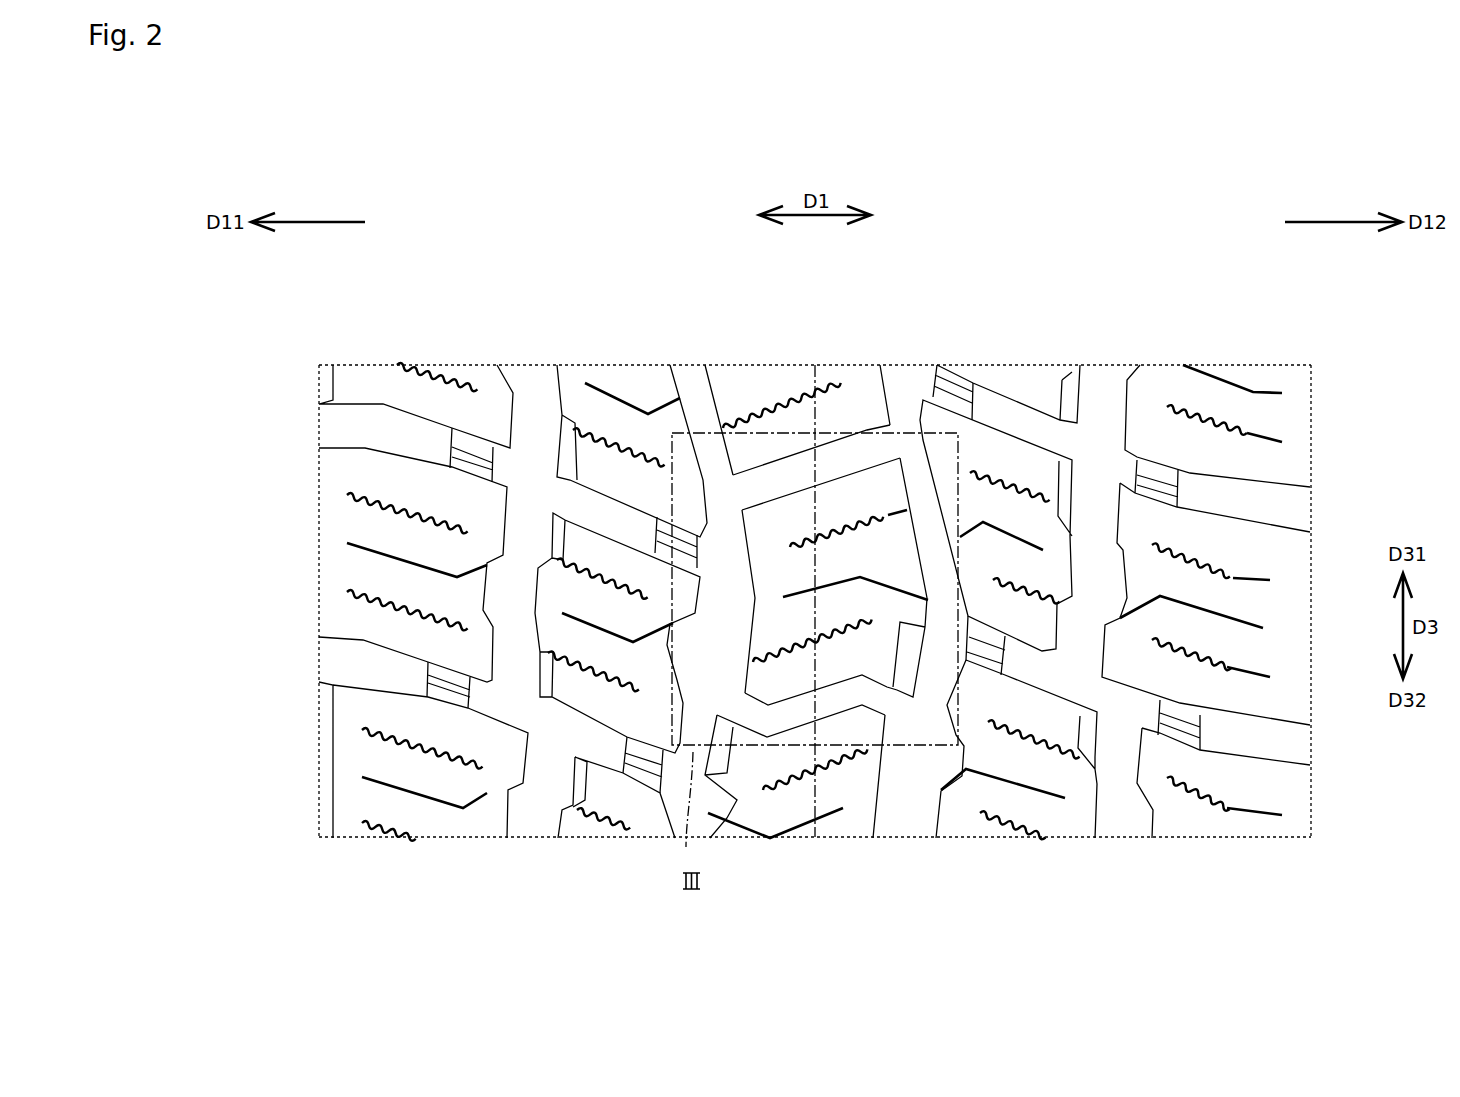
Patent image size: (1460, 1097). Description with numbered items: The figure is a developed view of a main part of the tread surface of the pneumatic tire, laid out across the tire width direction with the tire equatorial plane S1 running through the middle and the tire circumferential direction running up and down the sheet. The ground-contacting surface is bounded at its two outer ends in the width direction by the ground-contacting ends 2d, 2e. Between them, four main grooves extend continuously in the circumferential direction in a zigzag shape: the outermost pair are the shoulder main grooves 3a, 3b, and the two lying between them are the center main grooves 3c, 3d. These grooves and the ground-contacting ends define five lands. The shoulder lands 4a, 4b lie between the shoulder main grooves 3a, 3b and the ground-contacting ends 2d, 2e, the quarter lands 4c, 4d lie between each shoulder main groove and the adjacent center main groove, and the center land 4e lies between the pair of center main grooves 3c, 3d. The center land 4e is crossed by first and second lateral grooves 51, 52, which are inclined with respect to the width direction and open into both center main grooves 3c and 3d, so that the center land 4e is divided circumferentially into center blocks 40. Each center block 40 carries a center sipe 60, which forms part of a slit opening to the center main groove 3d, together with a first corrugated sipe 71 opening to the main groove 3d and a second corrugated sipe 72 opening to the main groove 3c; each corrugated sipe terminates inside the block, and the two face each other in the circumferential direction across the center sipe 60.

The ground-contacting end 2d is at (319, 405).
The ground-contacting end 2e is at (1311, 425).
The shoulder main groove 3a is at (542, 371).
The shoulder main groove 3b is at (1111, 369).
The center main groove 3c is at (701, 367).
The center main groove 3d is at (906, 369).
The shoulder land 4a is at (490, 345).
The shoulder land 4b is at (1310, 345).
The quarter land 4c is at (680, 345).
The quarter land 4d is at (1080, 345).
The center land 4e is at (875, 345).
The center block 40 is at (812, 577).
The first lateral groove 51 is at (763, 493).
The second lateral groove 52 is at (752, 714).
The center sipe 60 is at (871, 576).
The first corrugated sipe 71 is at (799, 535).
The second corrugated sipe 72 is at (839, 645).
The tire equatorial plane S1 is at (815, 830).